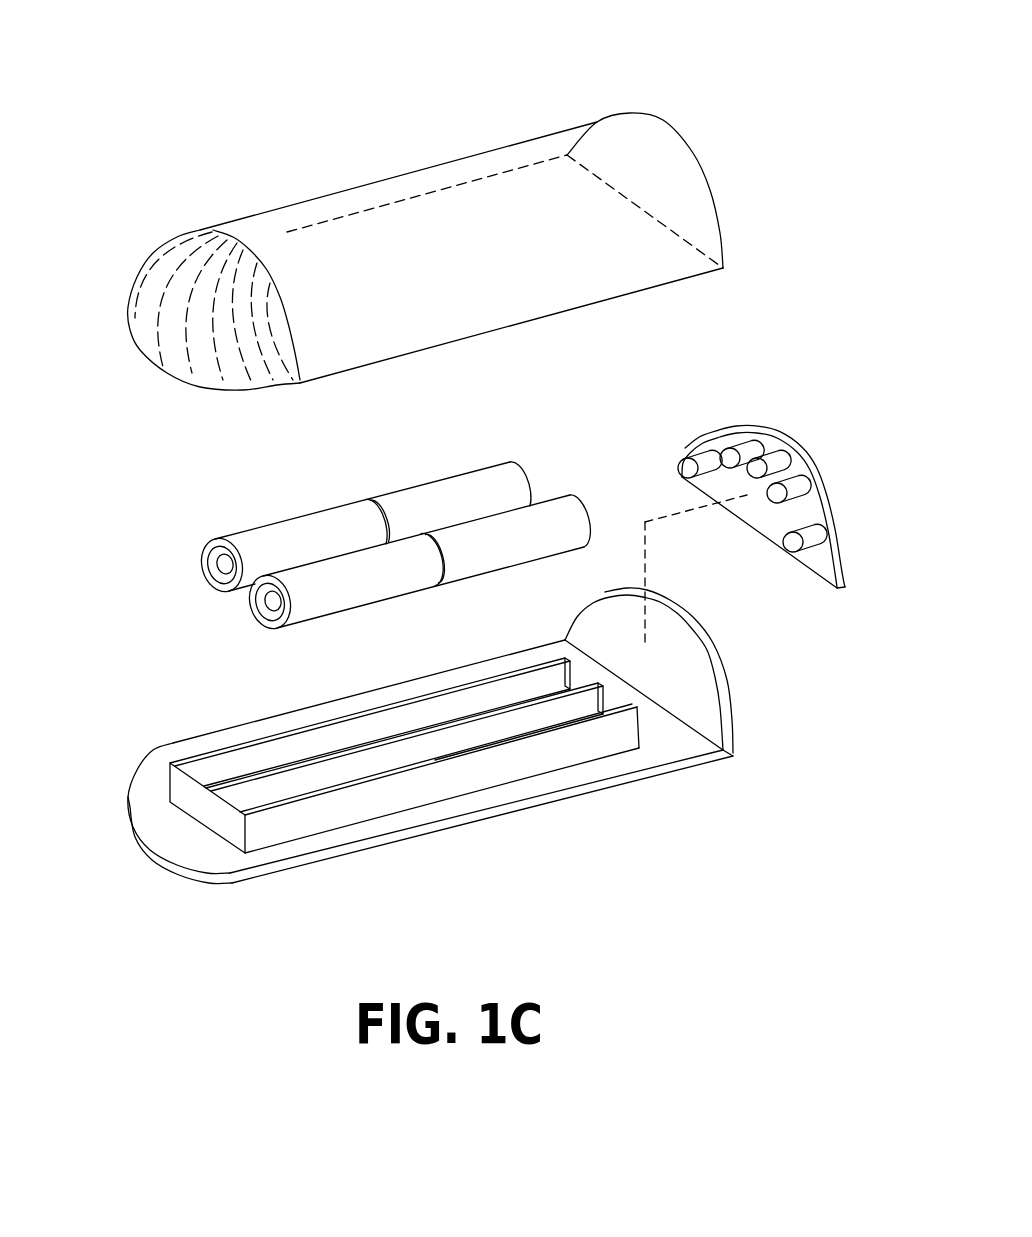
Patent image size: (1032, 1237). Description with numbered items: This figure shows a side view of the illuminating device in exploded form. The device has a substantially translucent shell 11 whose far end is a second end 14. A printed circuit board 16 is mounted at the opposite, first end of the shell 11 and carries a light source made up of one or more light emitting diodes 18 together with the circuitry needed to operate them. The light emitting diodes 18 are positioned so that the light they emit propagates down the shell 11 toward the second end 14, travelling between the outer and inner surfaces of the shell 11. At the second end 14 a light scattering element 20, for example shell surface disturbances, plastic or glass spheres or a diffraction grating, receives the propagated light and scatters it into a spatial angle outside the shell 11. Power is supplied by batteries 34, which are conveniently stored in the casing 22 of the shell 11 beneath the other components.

The translucent shell 11 is at (418, 92).
The second end 14 is at (112, 236).
The light scattering element 20 is at (170, 320).
The batteries 34 is at (192, 529).
The printed circuit board 16 is at (866, 526).
The light emitting diodes 18 is at (742, 452).
The casing 22 is at (575, 822).